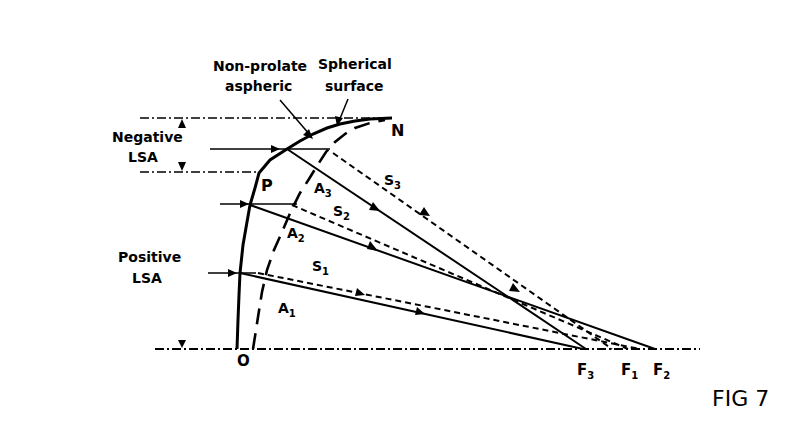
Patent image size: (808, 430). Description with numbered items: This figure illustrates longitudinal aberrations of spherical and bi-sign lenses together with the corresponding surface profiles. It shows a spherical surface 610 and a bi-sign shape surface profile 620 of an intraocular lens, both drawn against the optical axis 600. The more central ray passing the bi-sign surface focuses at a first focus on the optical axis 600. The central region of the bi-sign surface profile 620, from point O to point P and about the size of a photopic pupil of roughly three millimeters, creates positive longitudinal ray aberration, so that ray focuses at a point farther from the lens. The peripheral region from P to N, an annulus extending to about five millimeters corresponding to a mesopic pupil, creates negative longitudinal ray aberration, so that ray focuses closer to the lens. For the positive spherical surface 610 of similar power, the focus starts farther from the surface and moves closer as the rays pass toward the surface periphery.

The optical axis 600 is at (390, 352).
The spherical surface 610 is at (270, 322).
The bi-sign shape surface profile 620 is at (238, 300).